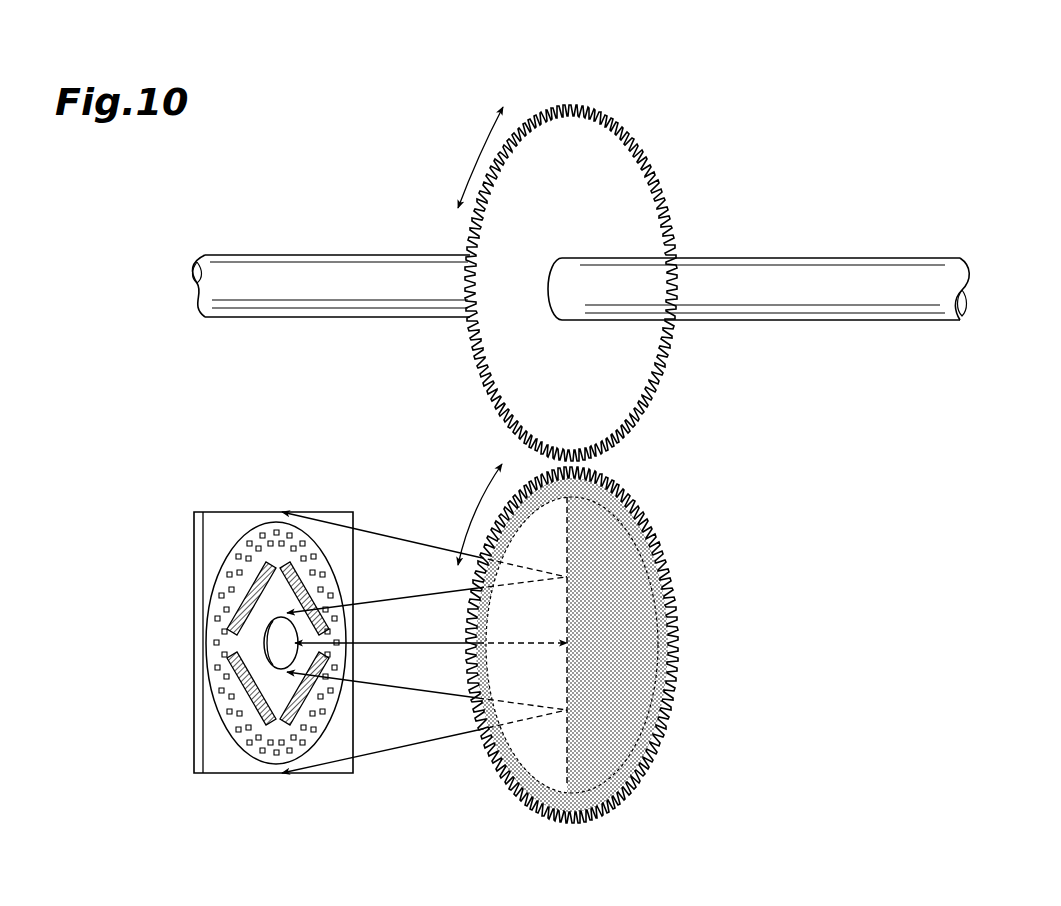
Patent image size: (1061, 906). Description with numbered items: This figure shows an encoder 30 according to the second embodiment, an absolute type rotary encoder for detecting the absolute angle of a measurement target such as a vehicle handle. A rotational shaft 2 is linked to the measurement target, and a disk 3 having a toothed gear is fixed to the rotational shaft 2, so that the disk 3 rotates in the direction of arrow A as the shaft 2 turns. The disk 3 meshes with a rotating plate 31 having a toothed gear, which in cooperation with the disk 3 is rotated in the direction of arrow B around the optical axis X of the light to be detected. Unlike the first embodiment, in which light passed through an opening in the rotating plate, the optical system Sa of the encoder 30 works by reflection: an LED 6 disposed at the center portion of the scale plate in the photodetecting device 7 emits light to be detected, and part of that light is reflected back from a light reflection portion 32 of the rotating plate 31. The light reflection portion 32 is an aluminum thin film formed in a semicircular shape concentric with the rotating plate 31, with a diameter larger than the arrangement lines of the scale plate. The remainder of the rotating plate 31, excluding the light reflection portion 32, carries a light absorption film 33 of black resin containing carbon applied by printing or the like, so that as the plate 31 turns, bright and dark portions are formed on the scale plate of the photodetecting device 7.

The rotational shaft 2 is at (848, 282).
The disk having toothed gear 3 is at (647, 200).
The encoder 30 is at (967, 226).
The rotating plate having toothed gear 31 is at (593, 650).
The light reflection portion 32 is at (538, 743).
The light absorption film 33 is at (653, 533).
The LED 6 is at (277, 642).
The photodetecting device 7 is at (186, 711).
The optical system Sa is at (316, 483).
The optical axis X is at (408, 642).
The arrow A is at (478, 143).
The arrow B is at (480, 500).